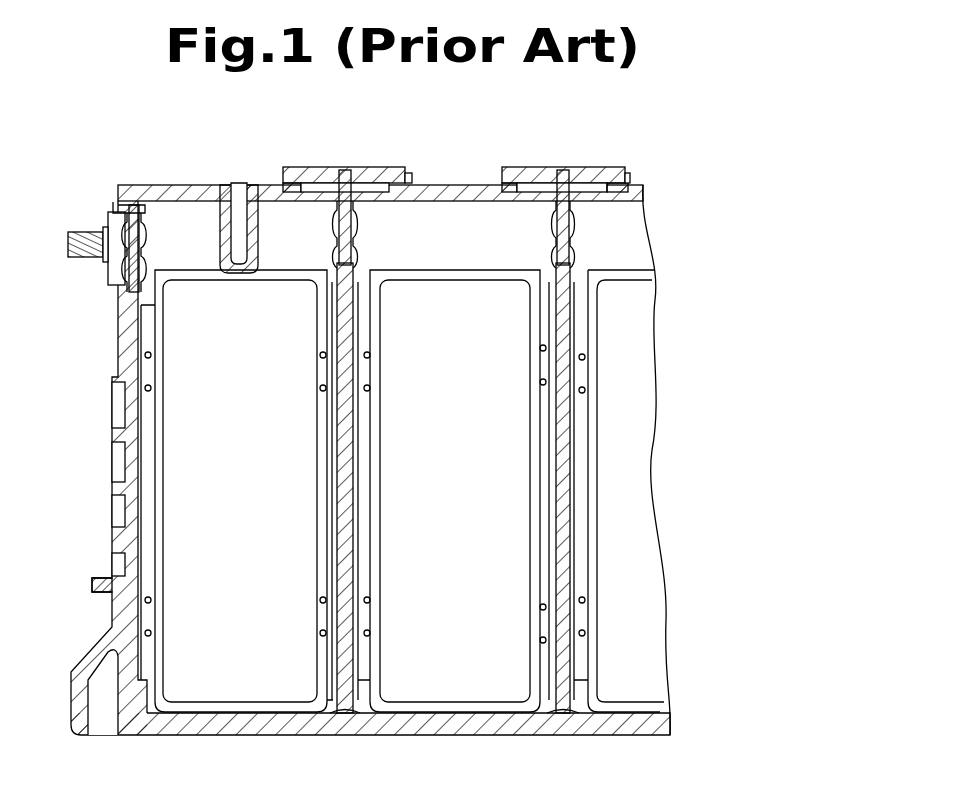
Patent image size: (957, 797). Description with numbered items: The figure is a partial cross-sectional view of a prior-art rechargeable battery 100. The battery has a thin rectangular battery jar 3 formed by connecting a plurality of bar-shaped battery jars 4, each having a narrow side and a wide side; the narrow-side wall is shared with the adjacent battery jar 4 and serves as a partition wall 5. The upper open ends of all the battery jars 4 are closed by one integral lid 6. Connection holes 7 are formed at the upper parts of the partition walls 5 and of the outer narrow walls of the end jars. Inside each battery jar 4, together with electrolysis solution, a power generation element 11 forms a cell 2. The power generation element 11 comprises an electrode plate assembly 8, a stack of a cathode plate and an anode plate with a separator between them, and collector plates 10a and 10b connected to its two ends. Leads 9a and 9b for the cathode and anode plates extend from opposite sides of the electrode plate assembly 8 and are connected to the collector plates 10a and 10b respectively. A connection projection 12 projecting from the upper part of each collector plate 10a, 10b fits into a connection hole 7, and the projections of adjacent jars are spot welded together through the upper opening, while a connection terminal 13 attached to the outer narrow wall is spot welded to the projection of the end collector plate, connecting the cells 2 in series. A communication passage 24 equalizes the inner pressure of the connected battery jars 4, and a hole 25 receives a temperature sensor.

The rechargeable battery 100 is at (357, 442).
The cell 2 is at (148, 699).
The rectangular battery jar 3 is at (357, 486).
The battery jar 4 is at (204, 261).
The partition wall 5 is at (348, 336).
The lid 6 is at (166, 190).
The connection hole 7 is at (336, 256).
The electrode plate assembly 8 is at (409, 491).
The lead 9a is at (150, 455).
The lead 9b is at (326, 436).
The collector plate 10a is at (128, 572).
The collector plate 10b is at (334, 487).
The power generation element 11 is at (212, 264).
The connection projection 12 is at (141, 243).
The connection terminal 13 is at (96, 231).
The communication passage 24 is at (300, 172).
The hole 25 is at (240, 195).